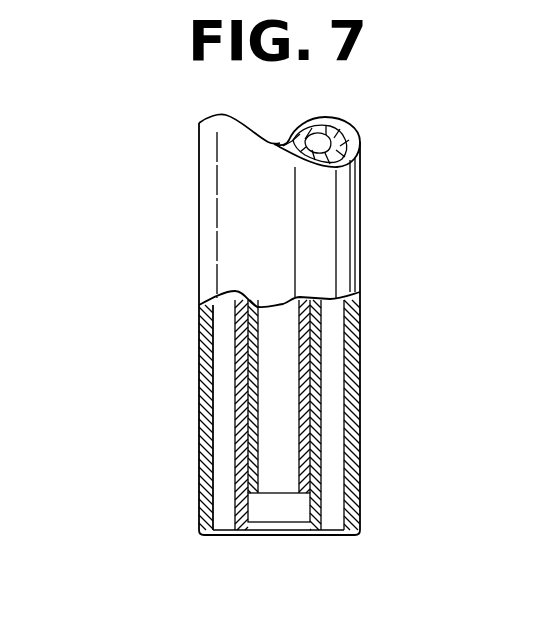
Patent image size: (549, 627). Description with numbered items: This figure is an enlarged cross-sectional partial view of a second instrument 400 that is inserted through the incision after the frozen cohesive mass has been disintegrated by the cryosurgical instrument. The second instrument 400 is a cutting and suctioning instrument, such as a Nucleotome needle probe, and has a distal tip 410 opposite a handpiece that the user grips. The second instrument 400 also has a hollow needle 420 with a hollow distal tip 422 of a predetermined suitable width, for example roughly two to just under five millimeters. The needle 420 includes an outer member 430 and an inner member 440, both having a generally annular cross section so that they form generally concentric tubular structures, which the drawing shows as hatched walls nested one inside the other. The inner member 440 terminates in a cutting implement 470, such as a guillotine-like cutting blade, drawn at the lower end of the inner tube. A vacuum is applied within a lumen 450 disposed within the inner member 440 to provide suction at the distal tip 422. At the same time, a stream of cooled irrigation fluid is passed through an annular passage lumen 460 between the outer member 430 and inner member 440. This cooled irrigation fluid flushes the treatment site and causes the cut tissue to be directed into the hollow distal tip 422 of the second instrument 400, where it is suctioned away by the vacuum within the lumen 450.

The second instrument 400 is at (176, 133).
The distal tip 410 is at (219, 536).
The hollow needle 420 is at (222, 413).
The hollow distal tip 422 is at (275, 536).
The outer member 430 is at (355, 349).
The inner member 440 is at (240, 465).
The lumen 450 is at (332, 408).
The annular passage lumen 460 is at (216, 326).
The cutting implement 470 is at (296, 530).